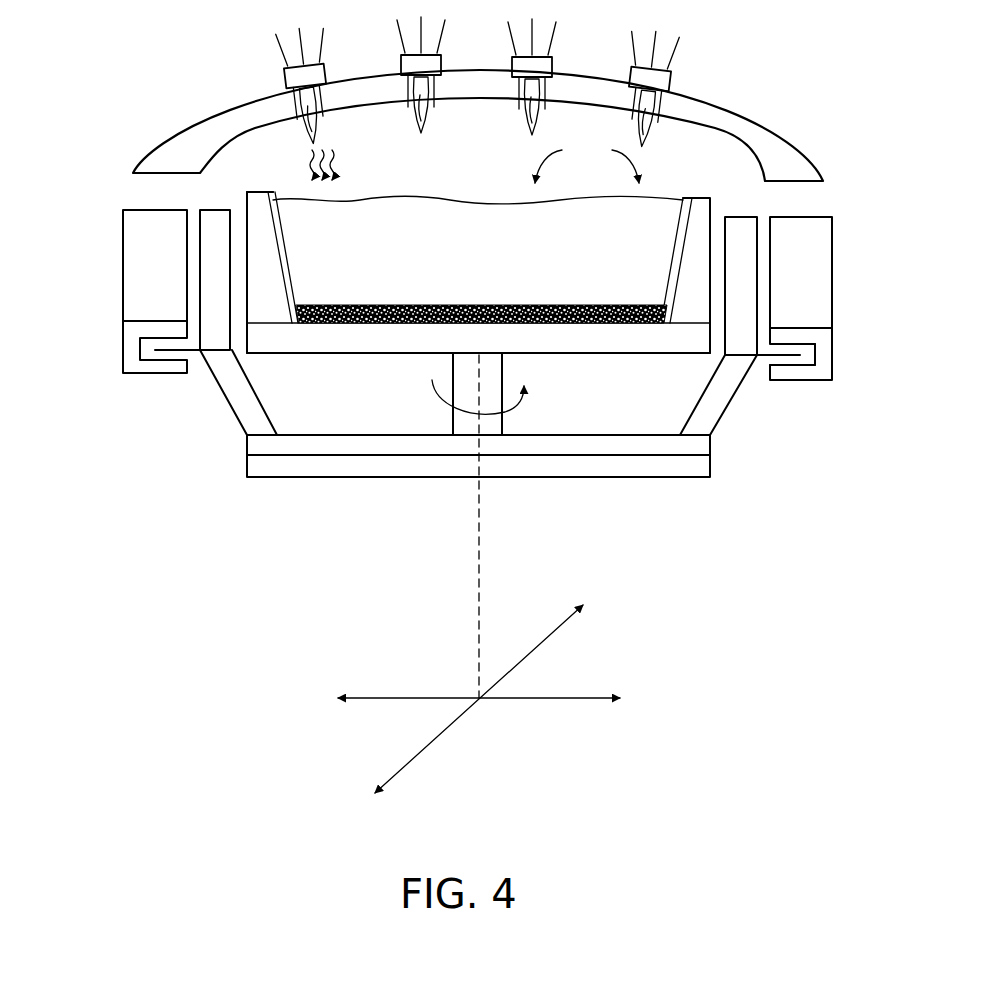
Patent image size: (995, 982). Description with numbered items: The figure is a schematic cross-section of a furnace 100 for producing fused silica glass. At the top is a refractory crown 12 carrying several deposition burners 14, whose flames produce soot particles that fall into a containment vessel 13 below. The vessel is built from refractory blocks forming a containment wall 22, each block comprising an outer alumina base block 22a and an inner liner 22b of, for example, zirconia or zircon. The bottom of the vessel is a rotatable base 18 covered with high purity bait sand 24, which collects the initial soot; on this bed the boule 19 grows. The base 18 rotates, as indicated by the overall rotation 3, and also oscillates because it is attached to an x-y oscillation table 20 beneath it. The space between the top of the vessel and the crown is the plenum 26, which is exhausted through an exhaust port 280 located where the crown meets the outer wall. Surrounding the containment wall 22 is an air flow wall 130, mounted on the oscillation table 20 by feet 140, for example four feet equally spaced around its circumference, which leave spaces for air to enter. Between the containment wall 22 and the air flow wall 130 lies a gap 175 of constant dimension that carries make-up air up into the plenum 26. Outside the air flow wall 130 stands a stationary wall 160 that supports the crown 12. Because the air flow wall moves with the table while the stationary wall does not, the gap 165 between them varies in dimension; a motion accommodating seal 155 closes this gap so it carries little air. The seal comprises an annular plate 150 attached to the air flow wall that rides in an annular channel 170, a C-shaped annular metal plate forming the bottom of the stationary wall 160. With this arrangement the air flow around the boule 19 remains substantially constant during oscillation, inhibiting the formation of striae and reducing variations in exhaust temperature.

The boule rotation 3 is at (513, 412).
The crown 12 is at (768, 130).
The containment vessel 13 is at (587, 161).
The deposition burners 14 is at (290, 71).
The rotatable base 18 is at (386, 342).
The boule 19 is at (441, 257).
The x-y oscillation table 20 is at (592, 478).
The containment wall 22 is at (461, 282).
The outer alumina base block 22a is at (690, 323).
The inner liner 22b is at (678, 258).
The bait sand 24 is at (470, 305).
The plenum 26 is at (478, 171).
The furnace 100 is at (131, 428).
The air flow wall 130 is at (213, 335).
The feet 140 is at (720, 415).
The annular plate 150 is at (790, 353).
The motion accommodating seal 155 is at (105, 347).
The stationary wall 160 is at (822, 250).
The gap 165 is at (195, 225).
The annular channel 170 is at (822, 380).
The gap 175 is at (243, 208).
The exhaust port 280 is at (812, 190).